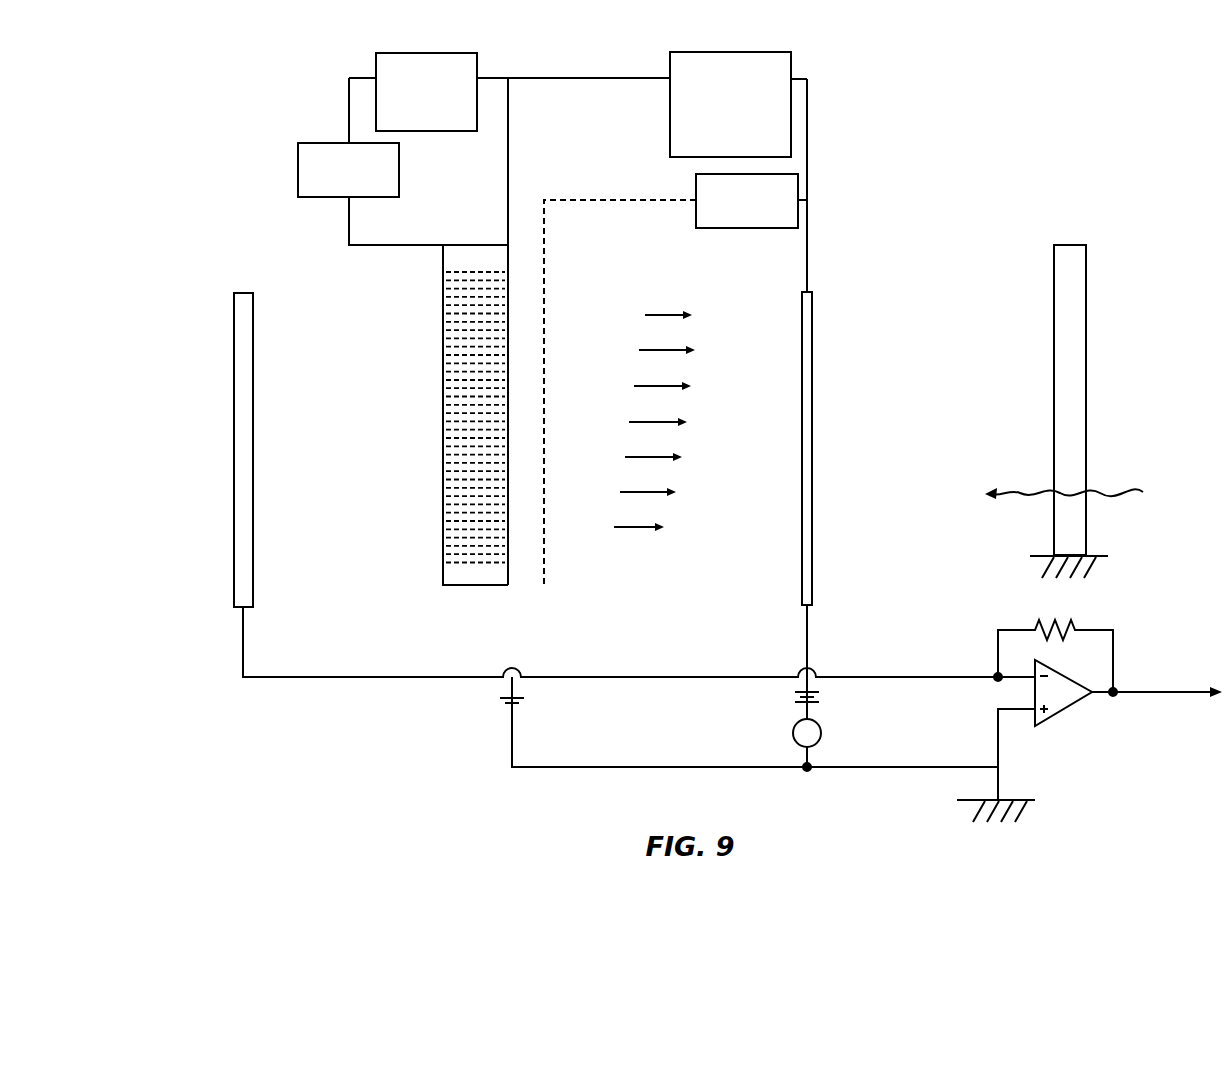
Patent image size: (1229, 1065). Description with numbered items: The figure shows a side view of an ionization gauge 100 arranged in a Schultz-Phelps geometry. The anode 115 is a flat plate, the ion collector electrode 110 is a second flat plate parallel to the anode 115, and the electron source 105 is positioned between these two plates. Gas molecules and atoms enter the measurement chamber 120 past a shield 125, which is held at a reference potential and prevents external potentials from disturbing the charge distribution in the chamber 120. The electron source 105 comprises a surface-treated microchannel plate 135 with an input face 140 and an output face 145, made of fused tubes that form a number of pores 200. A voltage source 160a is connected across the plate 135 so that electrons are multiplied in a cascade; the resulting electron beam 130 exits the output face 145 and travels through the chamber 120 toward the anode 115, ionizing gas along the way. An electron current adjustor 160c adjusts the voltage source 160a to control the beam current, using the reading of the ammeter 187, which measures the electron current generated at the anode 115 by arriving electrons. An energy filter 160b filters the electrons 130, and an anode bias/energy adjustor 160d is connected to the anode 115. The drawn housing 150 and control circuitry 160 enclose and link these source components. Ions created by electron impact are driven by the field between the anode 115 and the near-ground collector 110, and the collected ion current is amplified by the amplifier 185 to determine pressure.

The ionization gauge 100 is at (1052, 84).
The electron source 105 is at (418, 455).
The ion collector electrode 110 is at (243, 292).
The anode 115 is at (812, 451).
The measurement chamber 120 is at (642, 632).
The shield 125 is at (1086, 389).
The electron beam 130 is at (635, 531).
The microchannel plate 135 is at (476, 585).
The input face 140 is at (441, 524).
The output face 145 is at (508, 585).
The housing 150 is at (379, 248).
The control circuitry 160 is at (505, 200).
The voltage source 160a is at (399, 170).
The energy filter 160b is at (798, 183).
The electron current adjustor 160c is at (406, 53).
The anode bias/energy adjustor 160d is at (761, 52).
The amplifier 185 is at (1062, 712).
The ammeter 187 is at (793, 733).
The pores 200 is at (491, 377).